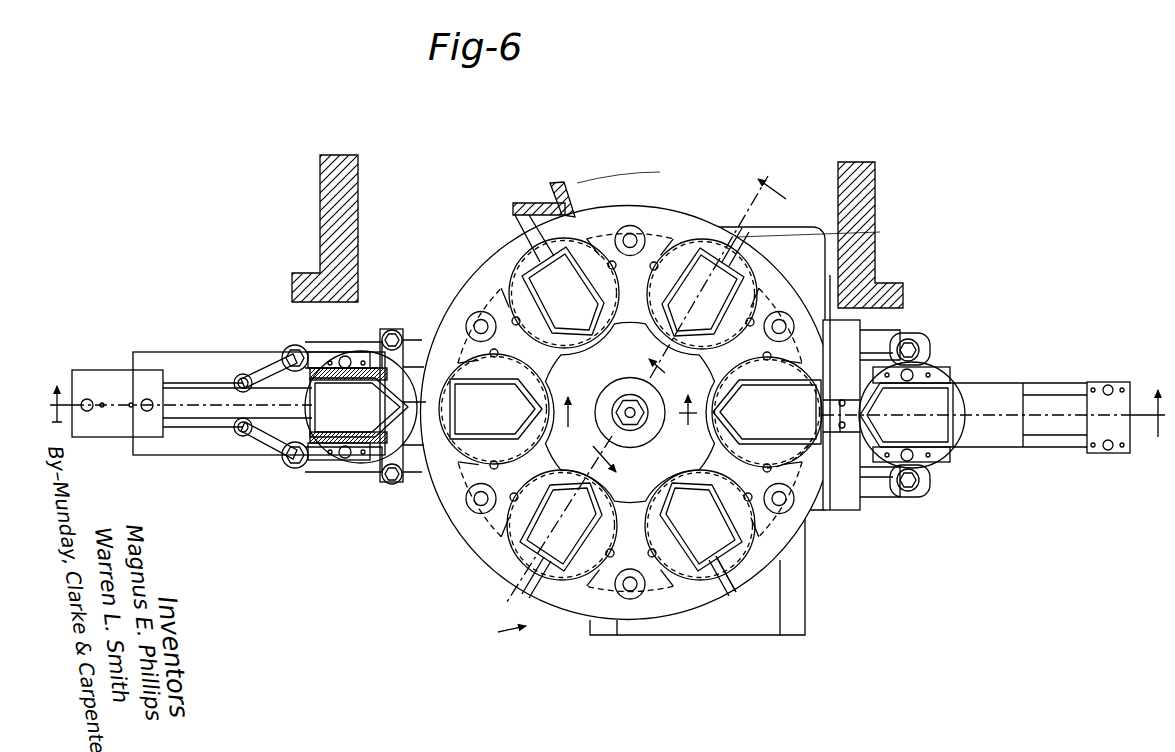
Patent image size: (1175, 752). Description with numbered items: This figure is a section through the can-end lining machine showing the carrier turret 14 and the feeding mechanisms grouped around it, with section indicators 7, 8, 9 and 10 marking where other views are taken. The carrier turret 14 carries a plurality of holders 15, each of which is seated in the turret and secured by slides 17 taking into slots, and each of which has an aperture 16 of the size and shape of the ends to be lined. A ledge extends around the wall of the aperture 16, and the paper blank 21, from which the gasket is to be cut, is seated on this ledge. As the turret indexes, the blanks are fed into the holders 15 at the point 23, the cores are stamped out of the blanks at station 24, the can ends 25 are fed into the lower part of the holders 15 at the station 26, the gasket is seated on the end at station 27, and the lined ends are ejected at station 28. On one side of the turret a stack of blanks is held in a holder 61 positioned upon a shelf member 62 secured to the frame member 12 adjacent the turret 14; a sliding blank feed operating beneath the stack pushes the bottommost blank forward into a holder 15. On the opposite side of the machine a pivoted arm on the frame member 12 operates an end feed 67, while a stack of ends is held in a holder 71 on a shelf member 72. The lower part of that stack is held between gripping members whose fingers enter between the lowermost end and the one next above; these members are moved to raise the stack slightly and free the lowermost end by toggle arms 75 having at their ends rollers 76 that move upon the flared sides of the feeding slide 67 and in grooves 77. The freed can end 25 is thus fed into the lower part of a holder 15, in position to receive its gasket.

The section line 7- 7 is at (918, 413).
The section line 8- 8 is at (318, 404).
The section line 9- 9 is at (712, 274).
The section line 10- 10 is at (549, 528).
The frame member 12 is at (348, 217).
The carrier turret 14 is at (660, 217).
The holders 15 is at (565, 335).
The apertures 16 is at (806, 392).
The slides 17 is at (730, 589).
The paper blank 21 is at (925, 388).
The blank feeding point 23 is at (800, 452).
The core stamping station 24 is at (758, 262).
The can ends 25 is at (336, 410).
The end feeding station 26 is at (452, 385).
The gasket seating station 27 is at (553, 578).
The ejecting station 28 is at (706, 592).
The blank stack holder 61 is at (955, 455).
The shelf member 62 is at (1000, 386).
The end feed 67 is at (178, 392).
The end stack holder 71 is at (300, 345).
The shelf member 72 is at (370, 352).
The toggle arms 75 is at (273, 362).
The rollers 76 is at (240, 374).
The grooves 77 is at (218, 380).